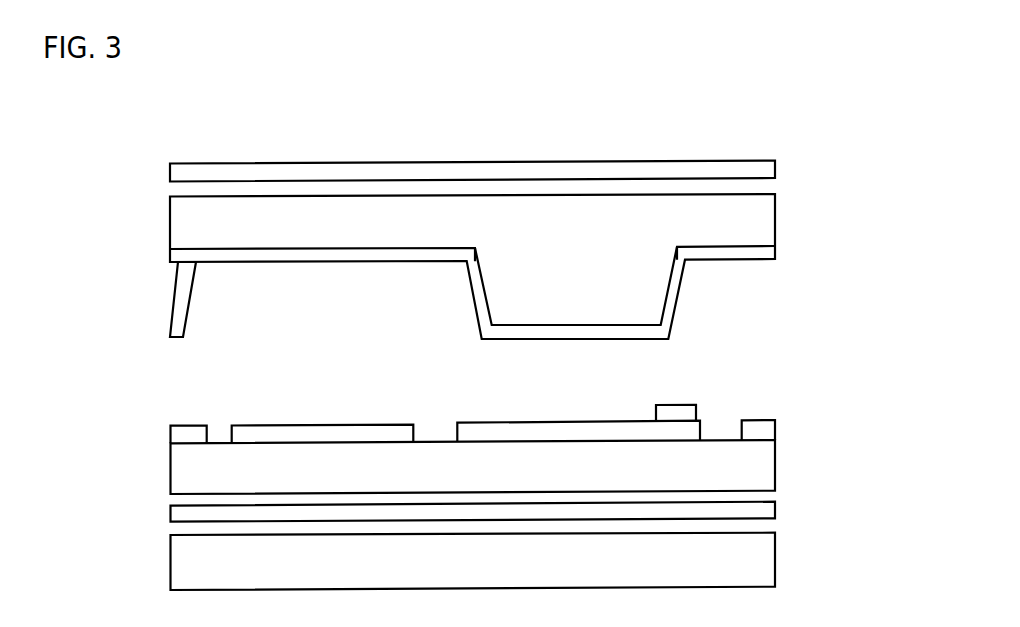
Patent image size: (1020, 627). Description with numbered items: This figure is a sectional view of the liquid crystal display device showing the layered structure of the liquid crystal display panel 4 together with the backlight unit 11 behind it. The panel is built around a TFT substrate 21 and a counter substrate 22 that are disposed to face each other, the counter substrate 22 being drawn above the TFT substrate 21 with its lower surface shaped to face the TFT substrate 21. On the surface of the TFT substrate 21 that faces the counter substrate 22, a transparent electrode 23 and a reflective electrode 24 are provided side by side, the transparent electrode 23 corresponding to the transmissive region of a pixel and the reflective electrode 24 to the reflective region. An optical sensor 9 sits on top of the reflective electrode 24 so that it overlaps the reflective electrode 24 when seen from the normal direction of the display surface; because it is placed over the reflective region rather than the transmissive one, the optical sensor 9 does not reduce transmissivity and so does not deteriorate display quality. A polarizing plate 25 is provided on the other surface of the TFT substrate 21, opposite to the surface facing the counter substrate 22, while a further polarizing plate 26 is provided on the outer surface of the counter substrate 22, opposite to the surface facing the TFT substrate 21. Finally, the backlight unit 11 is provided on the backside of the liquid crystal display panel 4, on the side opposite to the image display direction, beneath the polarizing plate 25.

The liquid crystal display panel 4 is at (771, 106).
The polarizing plate 26 is at (768, 168).
The counter substrate 22 is at (768, 225).
The TFT substrate 21 is at (768, 470).
The transparent electrode 23 is at (320, 430).
The reflective electrode 24 is at (539, 431).
The optical sensor 9 is at (679, 413).
The polarizing plate 25 is at (768, 509).
The backlight unit 11 is at (768, 566).